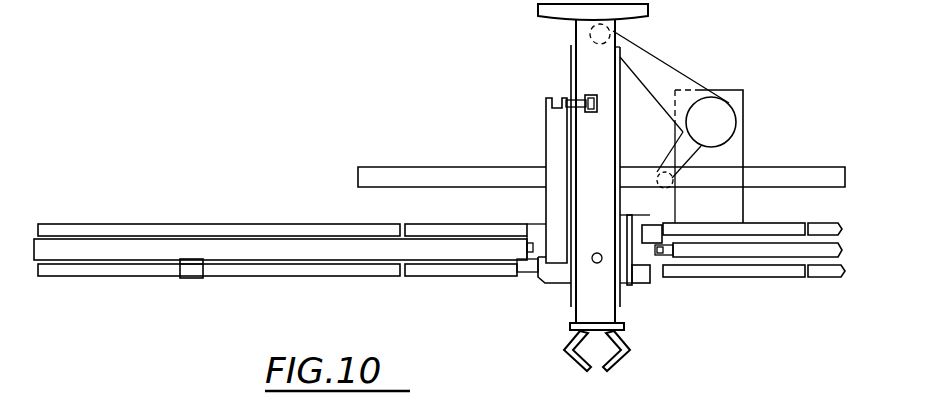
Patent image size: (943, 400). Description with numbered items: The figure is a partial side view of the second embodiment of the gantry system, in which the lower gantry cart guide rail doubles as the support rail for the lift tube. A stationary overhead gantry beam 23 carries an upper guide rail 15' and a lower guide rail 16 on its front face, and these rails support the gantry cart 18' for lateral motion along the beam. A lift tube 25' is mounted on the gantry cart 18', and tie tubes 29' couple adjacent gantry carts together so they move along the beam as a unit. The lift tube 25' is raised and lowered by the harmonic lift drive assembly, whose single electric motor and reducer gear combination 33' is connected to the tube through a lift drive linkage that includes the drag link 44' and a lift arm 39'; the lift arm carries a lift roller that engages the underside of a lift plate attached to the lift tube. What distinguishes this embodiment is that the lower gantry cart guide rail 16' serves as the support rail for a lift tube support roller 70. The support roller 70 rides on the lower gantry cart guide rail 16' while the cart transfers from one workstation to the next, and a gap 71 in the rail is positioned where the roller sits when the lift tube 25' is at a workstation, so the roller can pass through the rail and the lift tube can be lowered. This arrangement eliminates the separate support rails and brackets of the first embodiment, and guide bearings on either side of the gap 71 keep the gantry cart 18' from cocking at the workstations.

The lift tube 25' is at (574, 187).
The lift arm 39' is at (674, 106).
The electric motor and reducer gear combination 33' is at (731, 138).
The drag link 44' is at (732, 153).
The gantry beam 23 is at (449, 220).
The upper guide rail 15' is at (443, 221).
The lower guide rail 16 is at (277, 293).
The gap 71 is at (202, 278).
The lift tube support roller 70 is at (593, 262).
The gantry cart 18' is at (653, 265).
The tie tube 29' is at (748, 280).
The lower gantry cart guide rail 16' is at (754, 290).